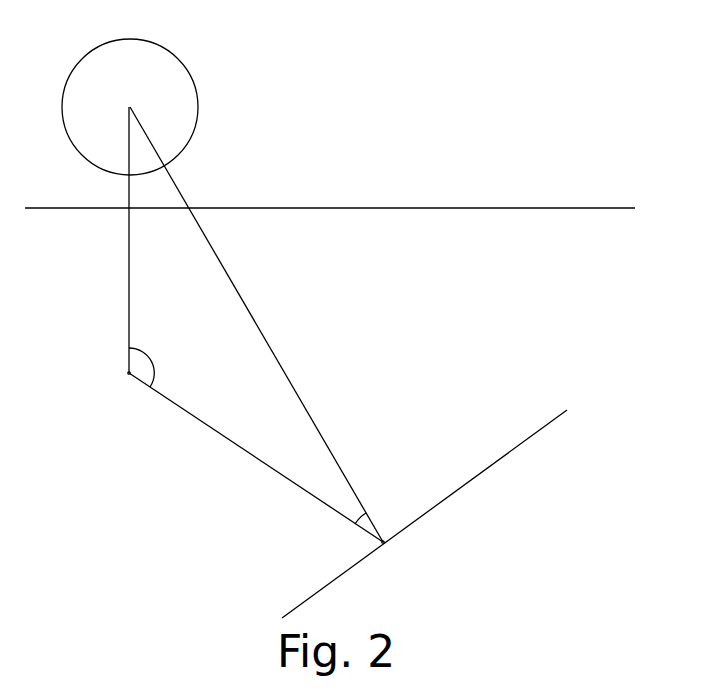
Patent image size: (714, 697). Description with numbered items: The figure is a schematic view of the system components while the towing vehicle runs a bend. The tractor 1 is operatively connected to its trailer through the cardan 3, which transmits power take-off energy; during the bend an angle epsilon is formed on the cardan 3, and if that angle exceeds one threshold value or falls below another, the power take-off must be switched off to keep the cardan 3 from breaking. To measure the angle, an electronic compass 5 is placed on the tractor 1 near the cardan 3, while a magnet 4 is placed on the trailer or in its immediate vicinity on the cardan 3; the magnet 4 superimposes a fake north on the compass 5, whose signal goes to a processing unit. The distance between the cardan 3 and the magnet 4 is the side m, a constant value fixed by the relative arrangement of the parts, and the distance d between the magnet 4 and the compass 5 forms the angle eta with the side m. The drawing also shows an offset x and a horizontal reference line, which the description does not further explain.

The tractor 1 is at (129, 270).
The cardan 3 is at (129, 374).
The magnet 4 is at (378, 547).
The electronic compass 5 is at (75, 105).
The distance between the magnet and the electronic compass d is at (252, 315).
The distance between the cardan and the magnet m is at (208, 428).
The offset x is at (140, 175).